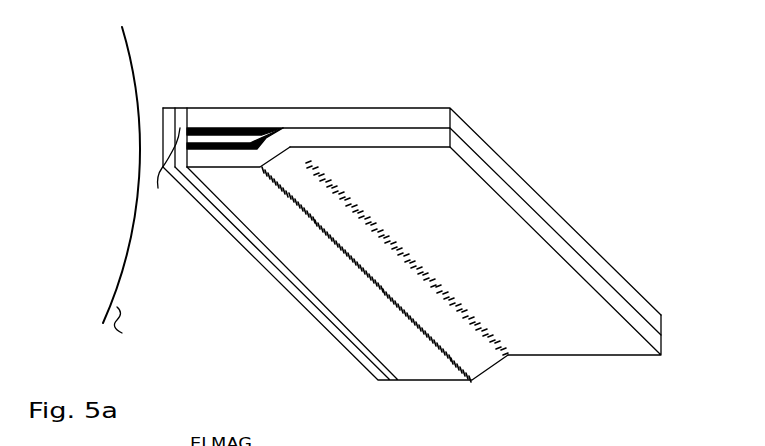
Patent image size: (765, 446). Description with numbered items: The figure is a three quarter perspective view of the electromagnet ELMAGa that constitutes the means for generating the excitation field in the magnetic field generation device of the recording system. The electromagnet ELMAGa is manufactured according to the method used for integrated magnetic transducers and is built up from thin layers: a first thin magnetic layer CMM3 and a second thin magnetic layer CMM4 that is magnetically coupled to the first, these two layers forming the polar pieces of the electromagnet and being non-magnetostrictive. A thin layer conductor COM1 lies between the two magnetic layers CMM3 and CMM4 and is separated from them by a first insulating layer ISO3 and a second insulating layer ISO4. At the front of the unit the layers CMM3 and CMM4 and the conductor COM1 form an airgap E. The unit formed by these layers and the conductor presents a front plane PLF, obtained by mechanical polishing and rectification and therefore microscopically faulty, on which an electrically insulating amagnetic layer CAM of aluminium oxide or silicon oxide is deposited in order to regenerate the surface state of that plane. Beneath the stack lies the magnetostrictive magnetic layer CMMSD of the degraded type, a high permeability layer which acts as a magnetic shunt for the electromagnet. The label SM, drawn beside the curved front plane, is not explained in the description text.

The front plane PLF is at (117, 175).
The substrate material SM is at (124, 330).
The airgap E is at (185, 136).
The amagnetic layer CAM is at (162, 169).
The first thin magnetic layer CMM3 is at (393, 140).
The second thin magnetic layer CMM4 is at (661, 333).
The electromagnet ELMAGa is at (497, 212).
The first insulating layer ISO3 is at (210, 128).
The second insulating layer ISO4 is at (284, 149).
The thin layer conductor COM1 is at (257, 135).
The magnetostrictive magnetic layer CMMSD is at (258, 262).